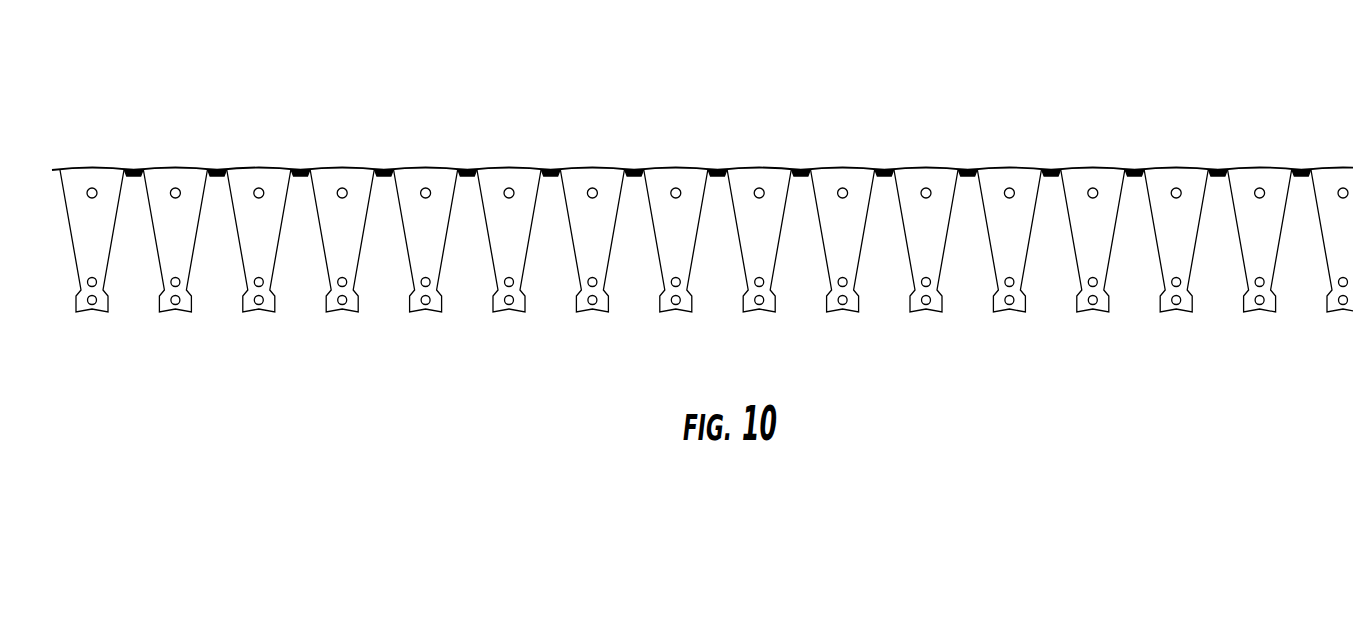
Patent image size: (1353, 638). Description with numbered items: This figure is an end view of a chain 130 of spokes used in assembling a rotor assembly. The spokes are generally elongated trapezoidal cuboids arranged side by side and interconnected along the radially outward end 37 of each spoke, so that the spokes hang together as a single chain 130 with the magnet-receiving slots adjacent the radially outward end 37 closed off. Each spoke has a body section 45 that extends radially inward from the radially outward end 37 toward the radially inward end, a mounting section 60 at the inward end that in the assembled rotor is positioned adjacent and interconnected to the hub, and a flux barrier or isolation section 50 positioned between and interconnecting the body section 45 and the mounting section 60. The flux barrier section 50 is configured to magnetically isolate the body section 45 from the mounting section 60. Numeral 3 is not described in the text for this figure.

The chain 130 is at (408, 110).
The body section 45 is at (587, 212).
The radially outward end 37 is at (610, 152).
The mounting section 60 is at (492, 323).
The flux barrier section 50 is at (534, 293).
The tine 3 is at (599, 329).